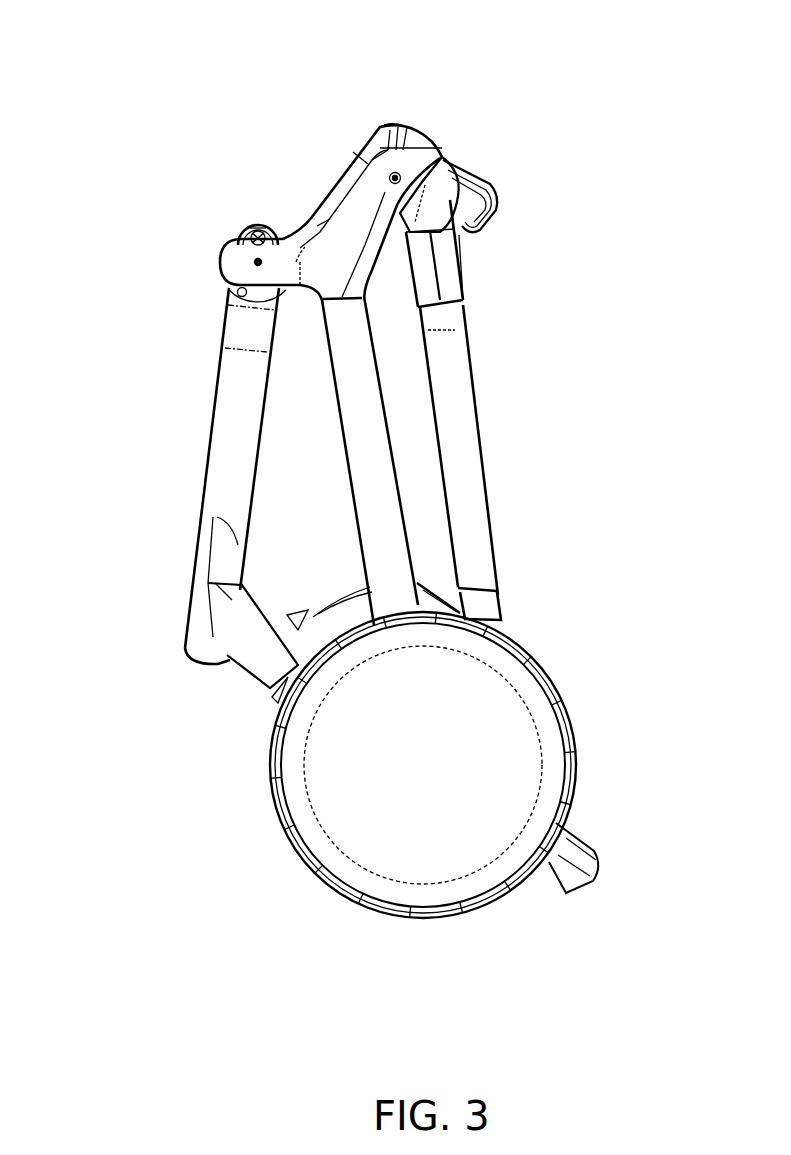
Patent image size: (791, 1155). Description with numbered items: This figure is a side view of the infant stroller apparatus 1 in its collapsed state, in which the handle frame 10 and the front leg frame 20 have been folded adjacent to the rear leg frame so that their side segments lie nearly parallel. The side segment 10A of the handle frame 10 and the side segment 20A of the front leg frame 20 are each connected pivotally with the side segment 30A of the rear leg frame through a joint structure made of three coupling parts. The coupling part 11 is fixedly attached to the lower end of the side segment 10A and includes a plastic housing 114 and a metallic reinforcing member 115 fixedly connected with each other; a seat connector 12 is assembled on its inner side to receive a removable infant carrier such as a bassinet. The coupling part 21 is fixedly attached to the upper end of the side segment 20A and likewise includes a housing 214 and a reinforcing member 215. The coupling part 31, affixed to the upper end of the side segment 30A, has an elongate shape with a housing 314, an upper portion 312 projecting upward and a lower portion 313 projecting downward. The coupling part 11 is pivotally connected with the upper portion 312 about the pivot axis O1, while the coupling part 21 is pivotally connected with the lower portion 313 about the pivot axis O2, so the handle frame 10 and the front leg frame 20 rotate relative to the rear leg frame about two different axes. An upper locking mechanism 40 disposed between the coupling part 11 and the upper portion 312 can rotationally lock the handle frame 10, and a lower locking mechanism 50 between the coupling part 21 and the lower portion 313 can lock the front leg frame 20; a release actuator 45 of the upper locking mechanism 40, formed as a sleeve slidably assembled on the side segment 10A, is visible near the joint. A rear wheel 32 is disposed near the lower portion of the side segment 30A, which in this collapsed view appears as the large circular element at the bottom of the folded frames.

The infant stroller apparatus 1 is at (101, 123).
The handle frame 10 is at (477, 327).
The side segment of the handle frame 10A is at (452, 377).
The coupling part 11 is at (598, 185).
The housing 114 is at (444, 265).
The reinforcing member 115 is at (428, 200).
The seat connector 12 is at (484, 180).
The front leg frame 20 is at (204, 393).
The side segment of the front leg frame 20A is at (232, 462).
The coupling part 21 is at (152, 150).
The housing 214 is at (250, 232).
The reinforcing member 215 is at (240, 236).
The side segment of the rear leg frame 30A is at (372, 442).
The coupling part 31 is at (346, 76).
The upper portion 312 is at (388, 150).
The lower portion 313 is at (258, 232).
The housing 314 is at (407, 152).
The rear wheel 32 is at (390, 893).
The upper locking mechanism 40 is at (433, 135).
The release actuator 45 is at (482, 605).
The lower locking mechanism 50 is at (222, 283).
The pivot axis O1 is at (401, 178).
The pivot axis O2 is at (254, 262).